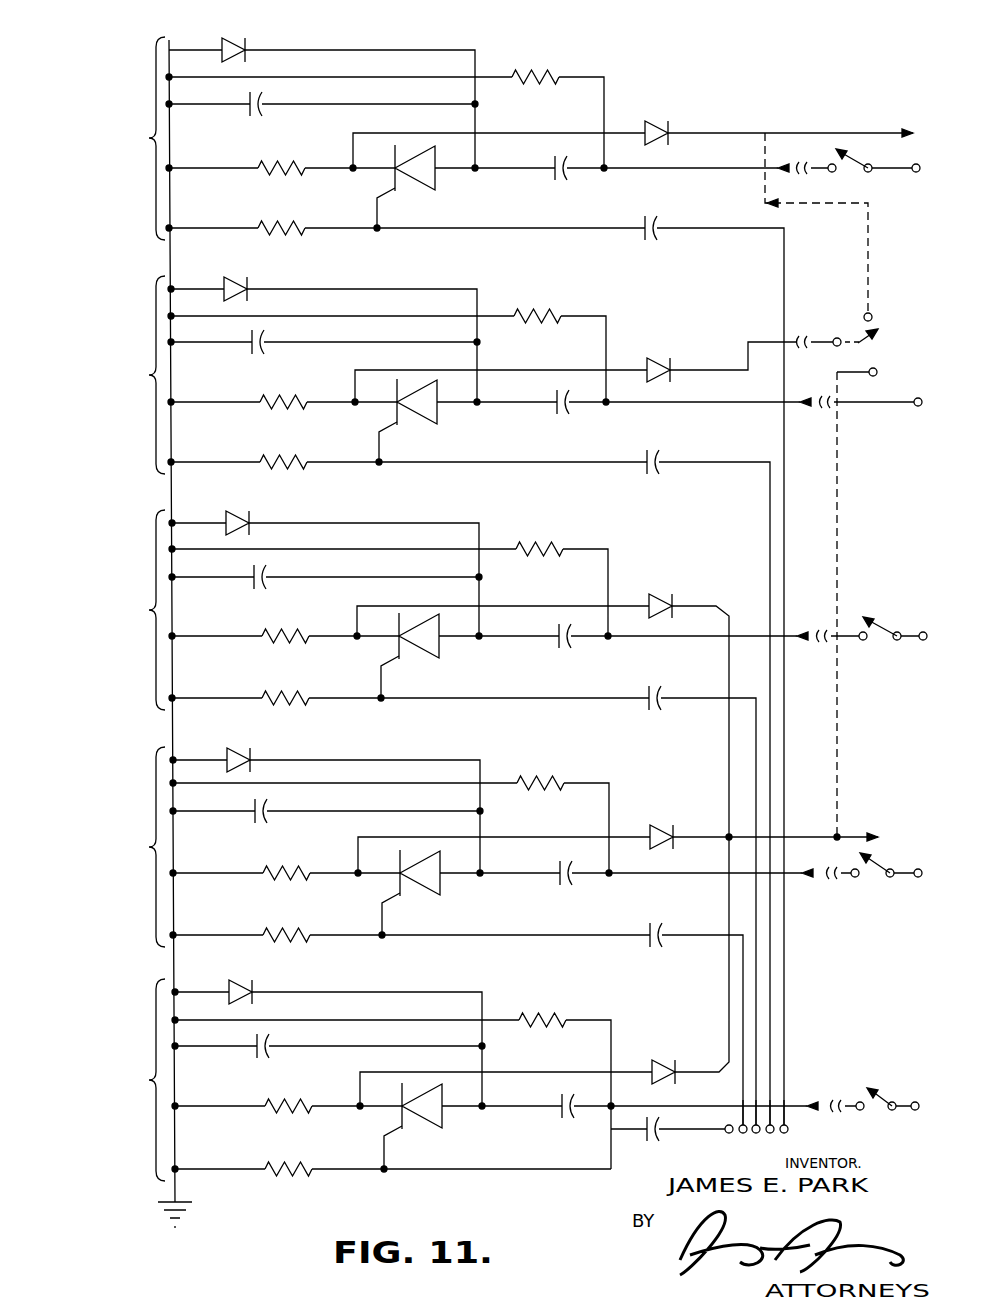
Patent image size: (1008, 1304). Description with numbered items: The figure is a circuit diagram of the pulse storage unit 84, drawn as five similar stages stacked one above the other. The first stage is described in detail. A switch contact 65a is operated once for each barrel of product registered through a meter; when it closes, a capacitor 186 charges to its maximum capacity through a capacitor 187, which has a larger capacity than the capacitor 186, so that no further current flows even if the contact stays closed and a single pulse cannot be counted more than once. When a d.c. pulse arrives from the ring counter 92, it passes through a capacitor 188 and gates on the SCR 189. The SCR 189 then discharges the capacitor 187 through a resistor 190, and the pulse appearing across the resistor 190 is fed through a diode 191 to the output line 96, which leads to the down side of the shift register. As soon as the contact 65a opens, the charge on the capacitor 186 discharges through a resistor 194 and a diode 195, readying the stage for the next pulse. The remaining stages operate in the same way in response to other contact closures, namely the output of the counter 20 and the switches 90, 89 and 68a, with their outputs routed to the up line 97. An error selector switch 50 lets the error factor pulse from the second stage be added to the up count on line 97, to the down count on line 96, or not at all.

The pulse storage unit 84 is at (490, 617).
The diode 195 is at (233, 37).
The resistor 194 is at (548, 73).
The capacitor 187 is at (262, 108).
The diode 191 is at (660, 118).
The resistor 190 is at (303, 170).
The SCR 189 is at (435, 178).
The capacitor 186 is at (567, 172).
The capacitor 188 is at (652, 243).
The output line 96 is at (826, 130).
The switch contact 65a is at (868, 172).
The error selector switch 50 is at (893, 318).
The counter 20 is at (865, 601).
The switch 90 is at (885, 618).
The line 97 is at (810, 833).
The switch 89 is at (883, 866).
The switch 68a is at (875, 1088).
The ring counter 92 is at (797, 1128).